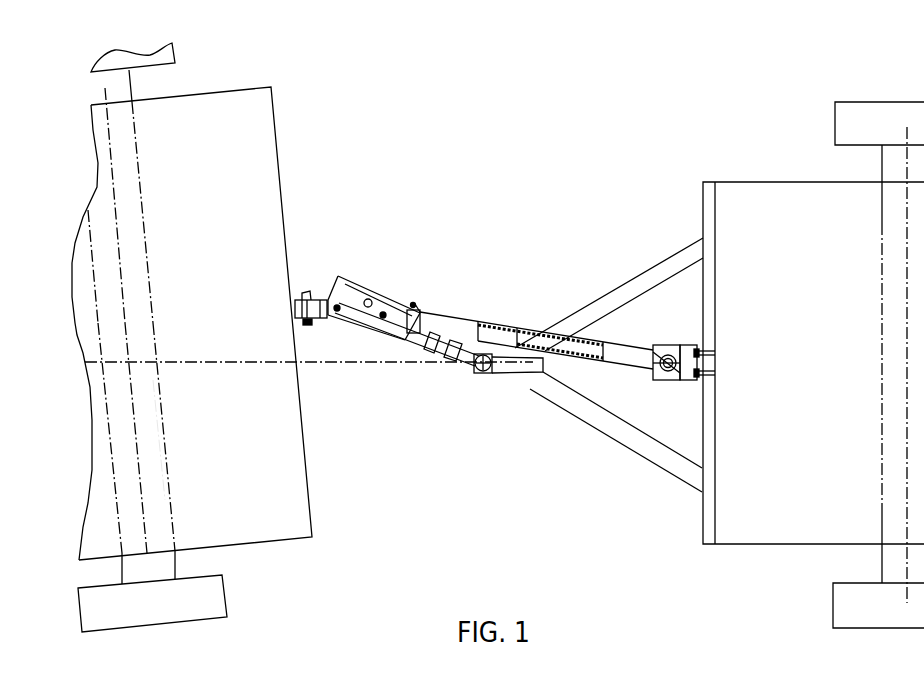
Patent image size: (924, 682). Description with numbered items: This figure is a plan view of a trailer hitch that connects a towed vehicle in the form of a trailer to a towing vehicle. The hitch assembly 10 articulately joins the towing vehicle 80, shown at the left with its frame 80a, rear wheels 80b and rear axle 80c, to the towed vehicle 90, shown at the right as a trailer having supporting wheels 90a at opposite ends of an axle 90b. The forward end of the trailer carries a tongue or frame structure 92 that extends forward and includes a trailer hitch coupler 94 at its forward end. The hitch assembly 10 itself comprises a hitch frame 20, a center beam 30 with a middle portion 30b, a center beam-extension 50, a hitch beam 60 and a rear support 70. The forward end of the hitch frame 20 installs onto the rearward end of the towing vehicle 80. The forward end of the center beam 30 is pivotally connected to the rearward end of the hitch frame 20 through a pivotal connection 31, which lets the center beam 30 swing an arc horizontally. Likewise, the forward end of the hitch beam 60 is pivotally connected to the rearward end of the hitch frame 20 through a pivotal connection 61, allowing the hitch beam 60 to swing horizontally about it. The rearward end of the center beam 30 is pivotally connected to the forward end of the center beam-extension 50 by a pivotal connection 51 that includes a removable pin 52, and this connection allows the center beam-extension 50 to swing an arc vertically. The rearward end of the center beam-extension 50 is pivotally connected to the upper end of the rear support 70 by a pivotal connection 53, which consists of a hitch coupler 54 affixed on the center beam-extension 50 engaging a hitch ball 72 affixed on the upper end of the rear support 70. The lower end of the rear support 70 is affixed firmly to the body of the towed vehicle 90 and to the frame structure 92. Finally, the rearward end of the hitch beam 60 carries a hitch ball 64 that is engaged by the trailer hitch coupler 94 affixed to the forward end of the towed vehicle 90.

The hitch assembly 10 is at (434, 228).
The hitch frame 20 is at (311, 298).
The center beam 30 is at (380, 297).
The middle portion of center beam 30b is at (376, 285).
The pivotal connection 31 is at (328, 276).
The center beam-extension 50 is at (536, 333).
The pivotal connection 51 is at (420, 308).
The removable pin 52 is at (415, 300).
The pivotal connection 53 is at (705, 352).
The hitch coupler 54 is at (660, 350).
The hitch beam 60 is at (407, 347).
The pivotal connection 61 is at (321, 326).
The hitch ball 64 is at (474, 370).
The rear support 70 is at (687, 383).
The hitch ball 72 is at (653, 378).
The towing vehicle 80 is at (258, 504).
The frame 80a is at (214, 563).
The rear wheels 80b is at (171, 603).
The rear axle 80c is at (186, 440).
The towed vehicle 90 is at (798, 487).
The supporting wheels 90a is at (849, 570).
The axle 90b is at (857, 368).
The frame structure 92 is at (609, 365).
The trailer hitch coupler 94 is at (508, 381).